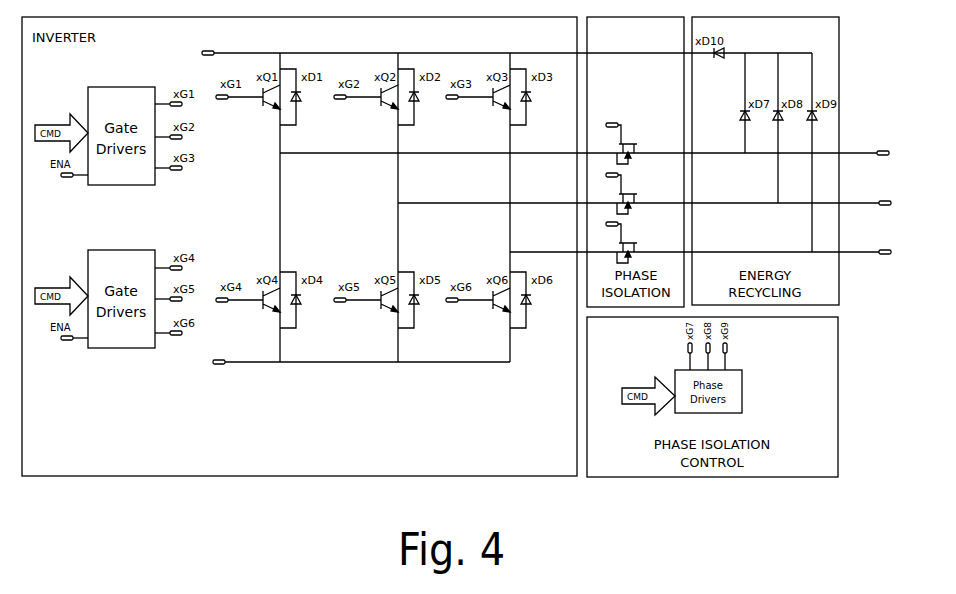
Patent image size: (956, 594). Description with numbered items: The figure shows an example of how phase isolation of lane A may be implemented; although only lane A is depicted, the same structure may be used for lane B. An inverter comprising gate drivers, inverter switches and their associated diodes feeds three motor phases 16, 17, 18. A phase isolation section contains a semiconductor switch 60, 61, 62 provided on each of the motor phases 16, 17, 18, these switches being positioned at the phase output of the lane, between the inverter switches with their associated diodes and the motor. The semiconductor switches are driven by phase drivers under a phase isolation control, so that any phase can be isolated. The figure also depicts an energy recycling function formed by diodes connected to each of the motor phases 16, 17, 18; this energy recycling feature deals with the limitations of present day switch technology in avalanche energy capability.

The motor phase 16 is at (863, 152).
The motor phase 17 is at (862, 202).
The motor phase 18 is at (868, 253).
The semiconductor switch 60 is at (640, 143).
The semiconductor switch 61 is at (640, 202).
The semiconductor switch 62 is at (640, 250).